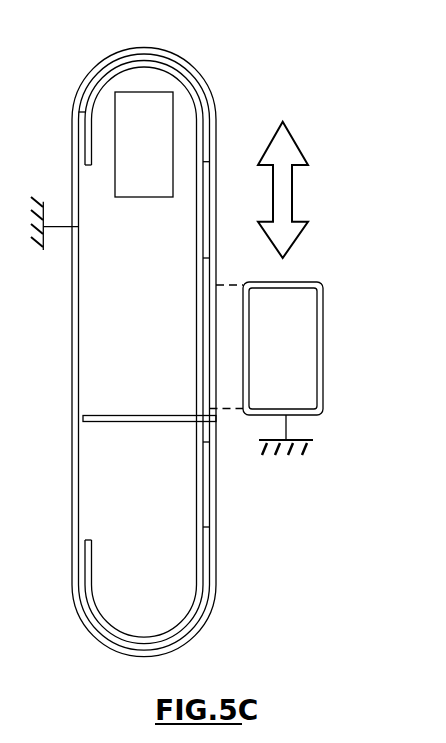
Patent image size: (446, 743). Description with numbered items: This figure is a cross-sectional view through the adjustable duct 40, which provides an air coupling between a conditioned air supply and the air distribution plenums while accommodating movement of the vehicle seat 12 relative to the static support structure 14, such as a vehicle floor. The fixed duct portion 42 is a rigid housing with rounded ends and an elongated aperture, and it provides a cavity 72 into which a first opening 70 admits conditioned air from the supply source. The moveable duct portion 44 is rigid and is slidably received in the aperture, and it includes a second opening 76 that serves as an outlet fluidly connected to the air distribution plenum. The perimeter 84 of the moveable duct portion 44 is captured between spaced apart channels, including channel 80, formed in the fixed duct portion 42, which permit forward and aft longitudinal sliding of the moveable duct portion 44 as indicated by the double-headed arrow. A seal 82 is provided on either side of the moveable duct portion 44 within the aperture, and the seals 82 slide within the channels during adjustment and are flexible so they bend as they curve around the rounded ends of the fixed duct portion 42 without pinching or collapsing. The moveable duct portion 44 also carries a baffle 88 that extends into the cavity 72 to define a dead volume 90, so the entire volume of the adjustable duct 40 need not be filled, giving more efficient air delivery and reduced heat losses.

The adjustable duct 40 is at (250, 97).
The seal 82 is at (224, 130).
The channel 80 is at (210, 191).
The fixed duct portion 42 is at (210, 508).
The first opening 70 is at (117, 186).
The static support structure 14 is at (44, 201).
The perimeter 84 is at (222, 297).
The cavity 72 is at (160, 329).
The dead volume 90 is at (160, 511).
The moveable duct portion 44 is at (323, 348).
The second opening 76 is at (287, 291).
The vehicle seat 12 is at (300, 440).
The baffle 88 is at (135, 422).